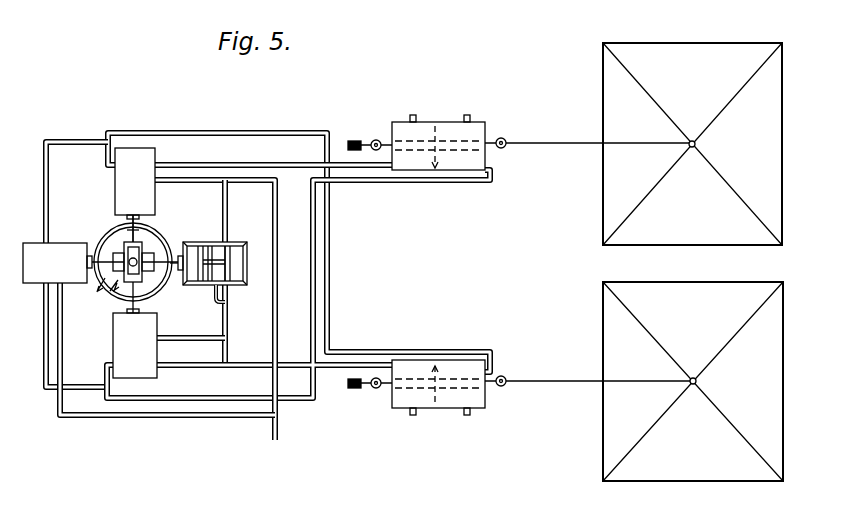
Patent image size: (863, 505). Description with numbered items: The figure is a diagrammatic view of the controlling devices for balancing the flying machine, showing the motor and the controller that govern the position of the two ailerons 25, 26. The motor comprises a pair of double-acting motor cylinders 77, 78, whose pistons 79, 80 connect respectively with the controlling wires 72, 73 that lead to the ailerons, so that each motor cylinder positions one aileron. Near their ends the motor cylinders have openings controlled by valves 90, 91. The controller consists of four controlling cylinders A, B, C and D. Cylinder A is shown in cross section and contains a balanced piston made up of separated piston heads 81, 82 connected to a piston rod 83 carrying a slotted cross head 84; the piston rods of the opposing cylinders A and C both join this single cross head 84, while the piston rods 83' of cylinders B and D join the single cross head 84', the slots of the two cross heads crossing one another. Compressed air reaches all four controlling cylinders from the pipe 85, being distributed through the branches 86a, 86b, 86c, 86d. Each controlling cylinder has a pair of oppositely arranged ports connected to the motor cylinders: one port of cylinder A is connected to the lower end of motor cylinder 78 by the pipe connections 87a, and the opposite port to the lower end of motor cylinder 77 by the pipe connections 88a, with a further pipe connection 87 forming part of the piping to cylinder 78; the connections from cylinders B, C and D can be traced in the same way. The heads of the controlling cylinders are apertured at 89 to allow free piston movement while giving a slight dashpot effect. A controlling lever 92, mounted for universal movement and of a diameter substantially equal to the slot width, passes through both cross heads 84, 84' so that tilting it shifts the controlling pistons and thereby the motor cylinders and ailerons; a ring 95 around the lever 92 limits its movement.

The aileron 25 is at (668, 36).
The aileron 26 is at (670, 470).
The controlling wire 72 is at (560, 143).
The controlling wire 73 is at (552, 381).
The motor cylinder 77 is at (443, 122).
The motor cylinder 78 is at (447, 410).
The piston 79 is at (435, 175).
The piston 80 is at (443, 360).
The piston head 81 is at (228, 243).
The piston head 82 is at (190, 243).
The piston rod 83 is at (134, 270).
The piston rod 83' is at (111, 217).
The slotted cross head 84 is at (154, 250).
The cross head 84' is at (99, 291).
The compressed air pipe 85 is at (279, 437).
The branch 86a is at (253, 320).
The branch 86b is at (186, 180).
The branch 86c is at (60, 320).
The branch 86d is at (184, 340).
The pipe connection 87 is at (230, 362).
The pipe connection 87a is at (281, 362).
The pipe connection 88a is at (228, 180).
The apertured head 89 is at (192, 287).
The valve 90 is at (414, 115).
The valve 91 is at (413, 415).
The controlling lever 92 is at (122, 250).
The ring 95 is at (150, 232).
The controlling cylinder A is at (244, 246).
The controlling cylinder B is at (137, 148).
The controlling cylinder C is at (31, 243).
The controlling cylinder D is at (142, 378).